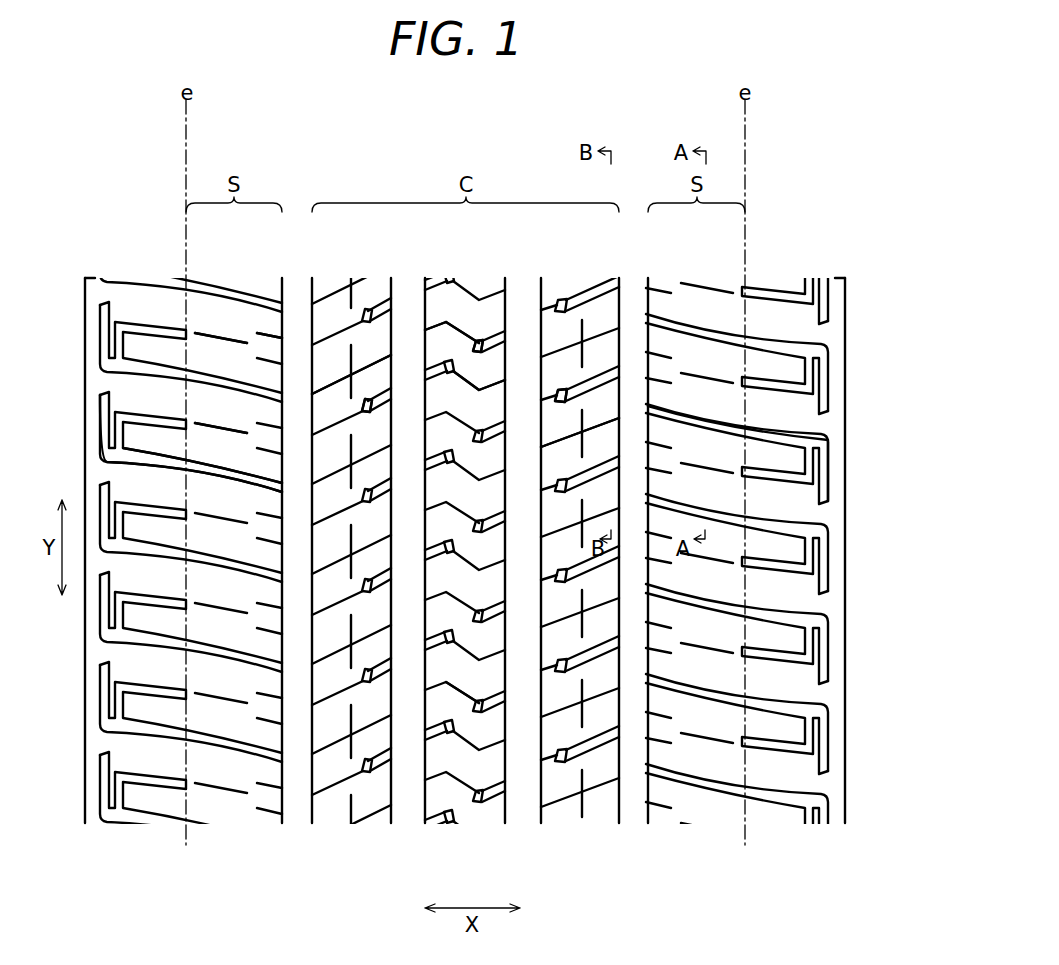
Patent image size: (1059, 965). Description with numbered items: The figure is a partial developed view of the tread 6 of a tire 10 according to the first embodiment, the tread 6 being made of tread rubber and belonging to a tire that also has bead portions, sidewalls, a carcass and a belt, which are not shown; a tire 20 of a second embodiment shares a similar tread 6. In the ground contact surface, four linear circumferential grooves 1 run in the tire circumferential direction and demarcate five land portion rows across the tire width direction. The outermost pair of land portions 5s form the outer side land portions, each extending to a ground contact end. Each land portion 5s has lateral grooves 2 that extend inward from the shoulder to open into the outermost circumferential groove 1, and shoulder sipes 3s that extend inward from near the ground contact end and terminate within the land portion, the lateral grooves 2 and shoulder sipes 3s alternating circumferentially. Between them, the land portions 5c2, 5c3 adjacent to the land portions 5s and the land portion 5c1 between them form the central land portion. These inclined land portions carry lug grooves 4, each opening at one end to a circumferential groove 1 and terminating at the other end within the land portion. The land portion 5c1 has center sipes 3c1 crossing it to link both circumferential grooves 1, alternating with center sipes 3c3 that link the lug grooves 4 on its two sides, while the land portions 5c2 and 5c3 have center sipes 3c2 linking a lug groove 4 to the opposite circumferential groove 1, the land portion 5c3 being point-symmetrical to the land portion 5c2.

The circumferential groove 1 is at (298, 826).
The lateral groove 2 is at (464, 547).
The shoulder sipe 3s is at (460, 608).
The center sipe 3c1 is at (466, 557).
The center sipe 3c2 is at (467, 547).
The center sipe 3c3 is at (466, 583).
The lug groove 4 is at (465, 541).
The land portion 5s is at (464, 538).
The land portion 5c1 is at (465, 532).
The land portion 5c2 is at (352, 554).
The land portion 5c3 is at (580, 520).
The tread 6 is at (770, 240).
The tire 10 is at (787, 182).
The tire 20 is at (787, 140).